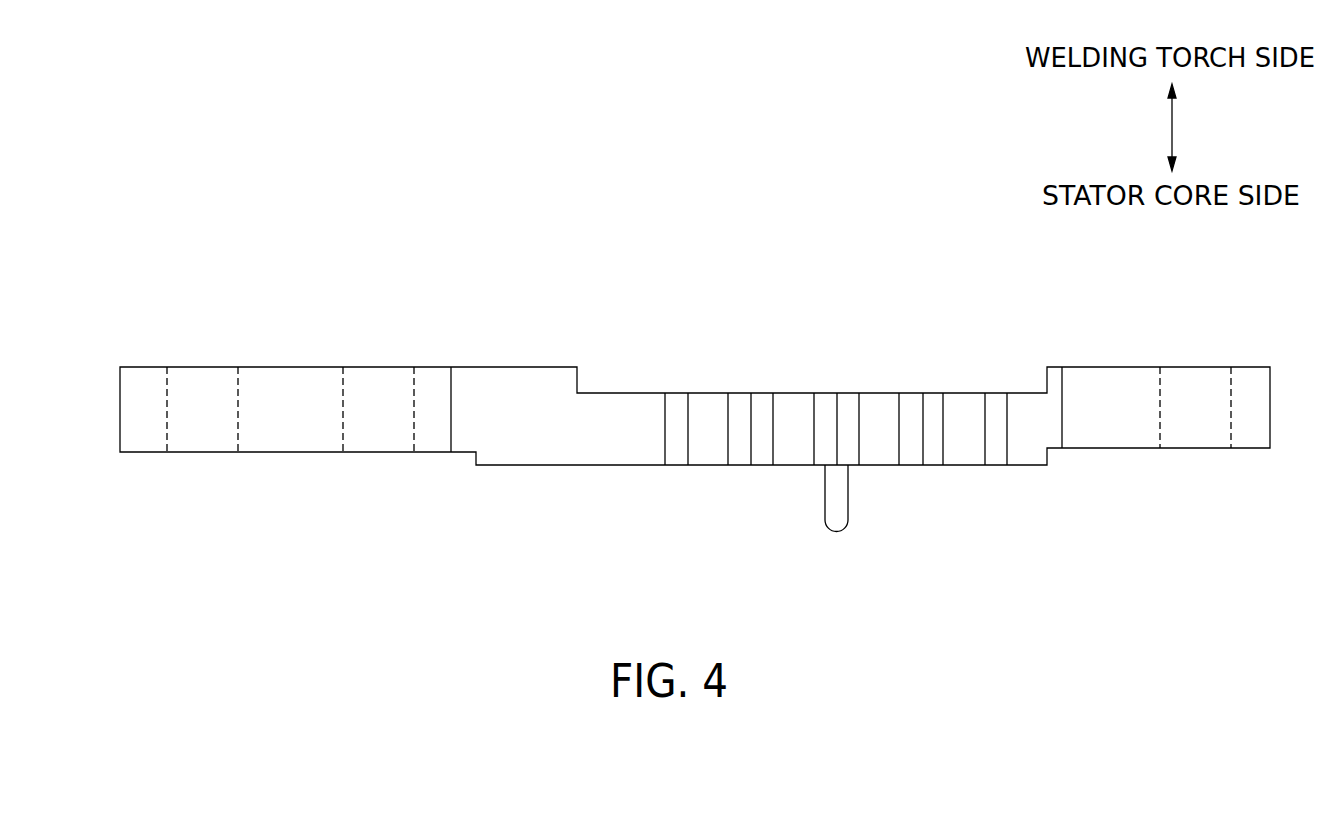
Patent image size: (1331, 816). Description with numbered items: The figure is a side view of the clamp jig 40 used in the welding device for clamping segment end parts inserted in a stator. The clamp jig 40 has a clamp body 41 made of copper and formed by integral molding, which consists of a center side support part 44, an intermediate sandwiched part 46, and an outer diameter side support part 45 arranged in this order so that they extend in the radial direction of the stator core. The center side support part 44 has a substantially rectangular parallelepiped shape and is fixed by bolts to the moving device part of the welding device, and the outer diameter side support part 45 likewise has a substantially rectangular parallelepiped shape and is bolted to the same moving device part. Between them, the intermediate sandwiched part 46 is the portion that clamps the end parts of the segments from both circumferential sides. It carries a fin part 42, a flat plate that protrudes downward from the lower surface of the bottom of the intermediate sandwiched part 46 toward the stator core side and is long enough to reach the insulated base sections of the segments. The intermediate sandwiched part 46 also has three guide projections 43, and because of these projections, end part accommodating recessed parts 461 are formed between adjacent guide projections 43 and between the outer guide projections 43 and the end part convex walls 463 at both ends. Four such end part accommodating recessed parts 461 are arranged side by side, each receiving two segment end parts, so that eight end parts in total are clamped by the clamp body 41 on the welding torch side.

The clamp jig 40 is at (177, 222).
The clamp body 41 is at (873, 465).
The fin part 42 is at (837, 532).
The guide projection 43 is at (847, 393).
The center side support part 44 is at (293, 452).
The outer diameter side support part 45 is at (1184, 448).
The intermediate sandwiched part 46 is at (878, 393).
The end part accommodating recessed part 461 is at (792, 464).
The end part convex wall 463 is at (682, 395).